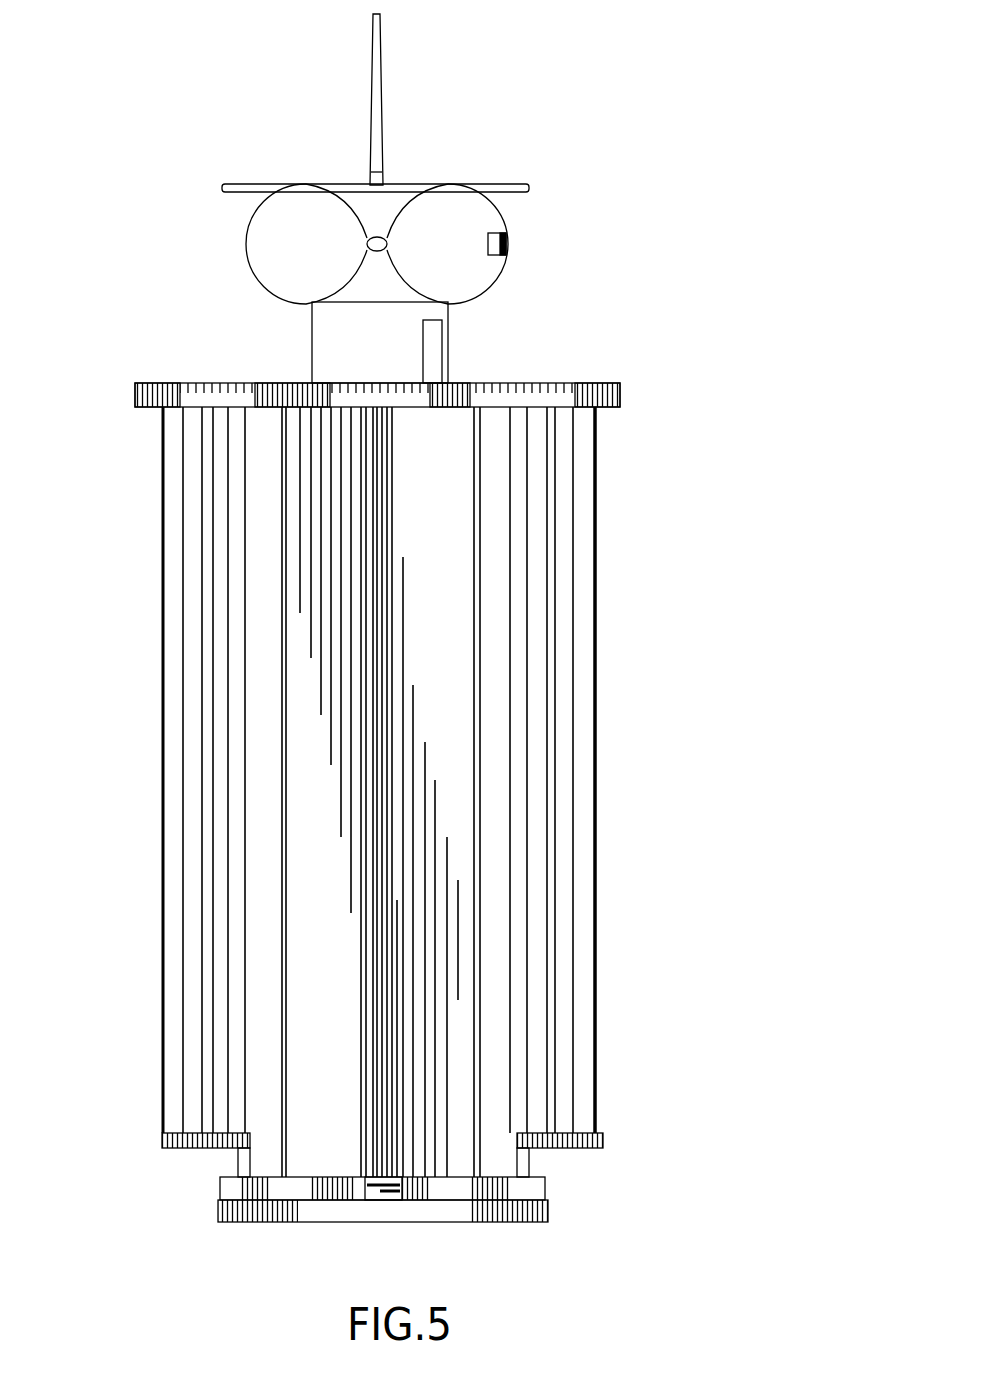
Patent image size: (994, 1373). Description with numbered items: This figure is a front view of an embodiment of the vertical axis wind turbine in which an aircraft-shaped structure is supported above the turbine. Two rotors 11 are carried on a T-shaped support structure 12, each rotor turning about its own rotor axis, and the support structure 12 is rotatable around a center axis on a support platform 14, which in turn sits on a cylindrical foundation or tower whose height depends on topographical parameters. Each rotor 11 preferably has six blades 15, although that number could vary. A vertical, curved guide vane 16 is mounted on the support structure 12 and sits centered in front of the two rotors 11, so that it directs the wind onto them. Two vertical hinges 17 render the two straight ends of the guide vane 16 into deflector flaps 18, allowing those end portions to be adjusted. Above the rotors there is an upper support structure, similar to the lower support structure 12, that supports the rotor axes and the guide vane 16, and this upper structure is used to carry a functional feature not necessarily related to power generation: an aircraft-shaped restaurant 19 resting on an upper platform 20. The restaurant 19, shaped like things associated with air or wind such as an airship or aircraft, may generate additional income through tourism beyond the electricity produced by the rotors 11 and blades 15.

The rotor 11 is at (610, 728).
The support structure 12 is at (532, 1188).
The support platform 14 is at (505, 1212).
The blade 15 is at (578, 593).
The guide vane 16 is at (443, 435).
The vertical hinge 17 is at (280, 433).
The deflector flap 18 is at (262, 475).
The restaurant 19 is at (427, 185).
The upper platform 20 is at (570, 382).